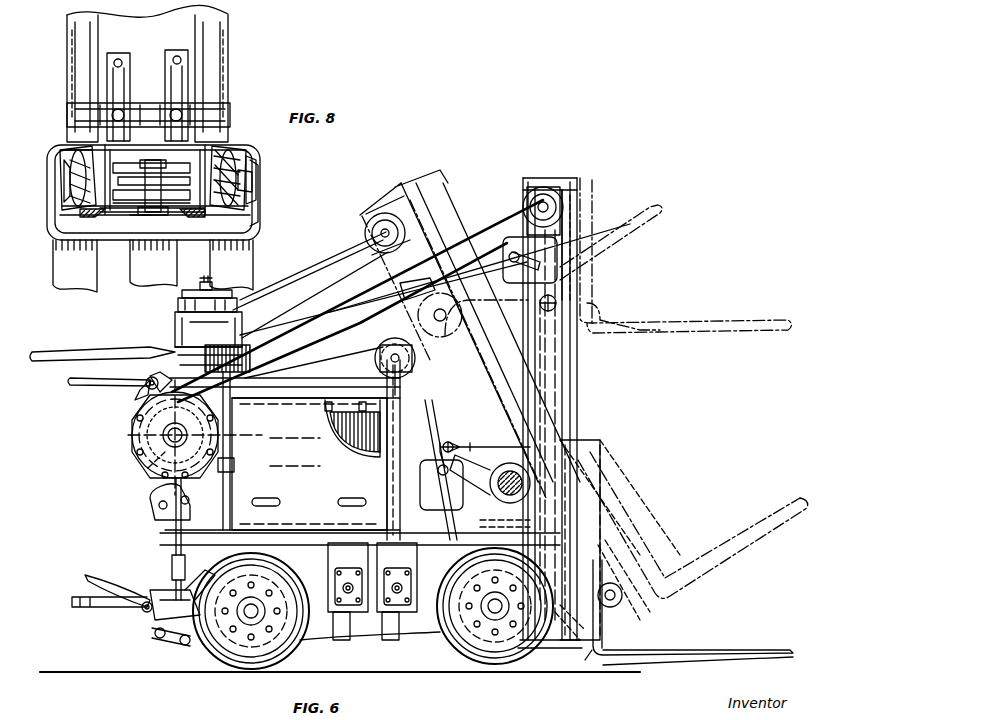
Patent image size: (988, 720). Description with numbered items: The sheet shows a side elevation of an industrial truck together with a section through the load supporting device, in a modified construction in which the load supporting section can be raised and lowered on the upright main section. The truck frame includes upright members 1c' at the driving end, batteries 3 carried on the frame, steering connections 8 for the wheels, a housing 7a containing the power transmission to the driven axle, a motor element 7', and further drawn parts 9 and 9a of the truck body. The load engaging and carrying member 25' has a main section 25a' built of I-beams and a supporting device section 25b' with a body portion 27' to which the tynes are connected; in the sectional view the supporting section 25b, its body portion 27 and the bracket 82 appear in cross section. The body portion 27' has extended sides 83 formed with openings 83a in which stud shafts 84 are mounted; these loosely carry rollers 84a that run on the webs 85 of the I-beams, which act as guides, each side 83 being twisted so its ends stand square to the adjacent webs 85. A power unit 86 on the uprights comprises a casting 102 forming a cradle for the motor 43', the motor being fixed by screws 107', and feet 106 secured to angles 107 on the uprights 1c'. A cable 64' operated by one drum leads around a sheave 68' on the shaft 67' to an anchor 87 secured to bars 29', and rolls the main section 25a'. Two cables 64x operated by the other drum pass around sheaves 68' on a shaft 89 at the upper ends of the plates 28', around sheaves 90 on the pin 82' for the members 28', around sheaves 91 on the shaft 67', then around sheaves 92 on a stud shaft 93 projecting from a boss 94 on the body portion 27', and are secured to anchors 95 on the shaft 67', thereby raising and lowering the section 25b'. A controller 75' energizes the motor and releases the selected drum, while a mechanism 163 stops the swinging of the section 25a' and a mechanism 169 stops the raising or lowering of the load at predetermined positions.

In FIG. 8, the mast channel 25b is at (153, 154).
In FIG. 8, the sheaves 90 is at (128, 66).
In FIG. 6, the sheaves 90 is at (506, 462).
In FIG. 8, the carriage bracket 82 is at (169, 95).
In FIG. 8, the cables 64x is at (145, 160).
In FIG. 6, the cables 64x is at (340, 350).
In FIG. 8, the fork carriage housing 27 is at (153, 209).
In FIG. 8, the stud shaft 93 is at (150, 160).
In FIG. 8, the sheaves 92 is at (172, 176).
In FIG. 6, the sheaves 92 is at (556, 660).
In FIG. 8, the rollers 84a is at (240, 128).
In FIG. 8, the webs 85 is at (68, 168).
In FIG. 8, the openings 83a is at (252, 160).
In FIG. 8, the stud shafts 84 is at (252, 176).
In FIG. 8, the extended sides 83 is at (252, 192).
In FIG. 6, the extended sides 83 is at (585, 660).
In FIG. 8, the boss 94 is at (140, 218).
In FIG. 6, the housing 7a is at (470, 575).
In FIG. 6, the batteries 3 is at (342, 440).
In FIG. 6, the upright members 1c' is at (360, 509).
In FIG. 6, the rear post 7' is at (422, 450).
In FIG. 6, the steering connections 8 is at (524, 530).
In FIG. 6, the motor 9 is at (130, 436).
In FIG. 6, the motor flange 9a is at (150, 470).
In FIG. 6, the power unit 86 is at (133, 396).
In FIG. 6, the casting 102 is at (170, 350).
In FIG. 6, the screws 107' is at (224, 319).
In FIG. 6, the angle 107 is at (241, 451).
In FIG. 6, the feet 106 is at (195, 495).
In FIG. 6, the anchor 87 is at (286, 390).
In FIG. 6, the sheave 68' is at (395, 349).
In FIG. 6, the shaft 89 is at (397, 380).
In FIG. 6, the bars 29' is at (314, 355).
In FIG. 6, the motor 43' is at (309, 271).
In FIG. 6, the controller 75' is at (315, 295).
In FIG. 6, the plates 28' is at (470, 335).
In FIG. 6, the cable 64' is at (357, 296).
In FIG. 6, the stopping mechanism 163 is at (440, 492).
In FIG. 6, the load engaging and carrying member 25' is at (567, 413).
In FIG. 6, the main section 25a' is at (618, 285).
In FIG. 6, the shaft 67' is at (560, 193).
In FIG. 6, the sheaves 91 is at (577, 192).
In FIG. 6, the anchors 95 is at (580, 214).
In FIG. 6, the stopping mechanism 169 is at (515, 238).
In FIG. 6, the shaft or pin 82' is at (620, 534).
In FIG. 6, the body portion 27' is at (693, 536).
In FIG. 6, the supporting device section 25b' is at (693, 612).